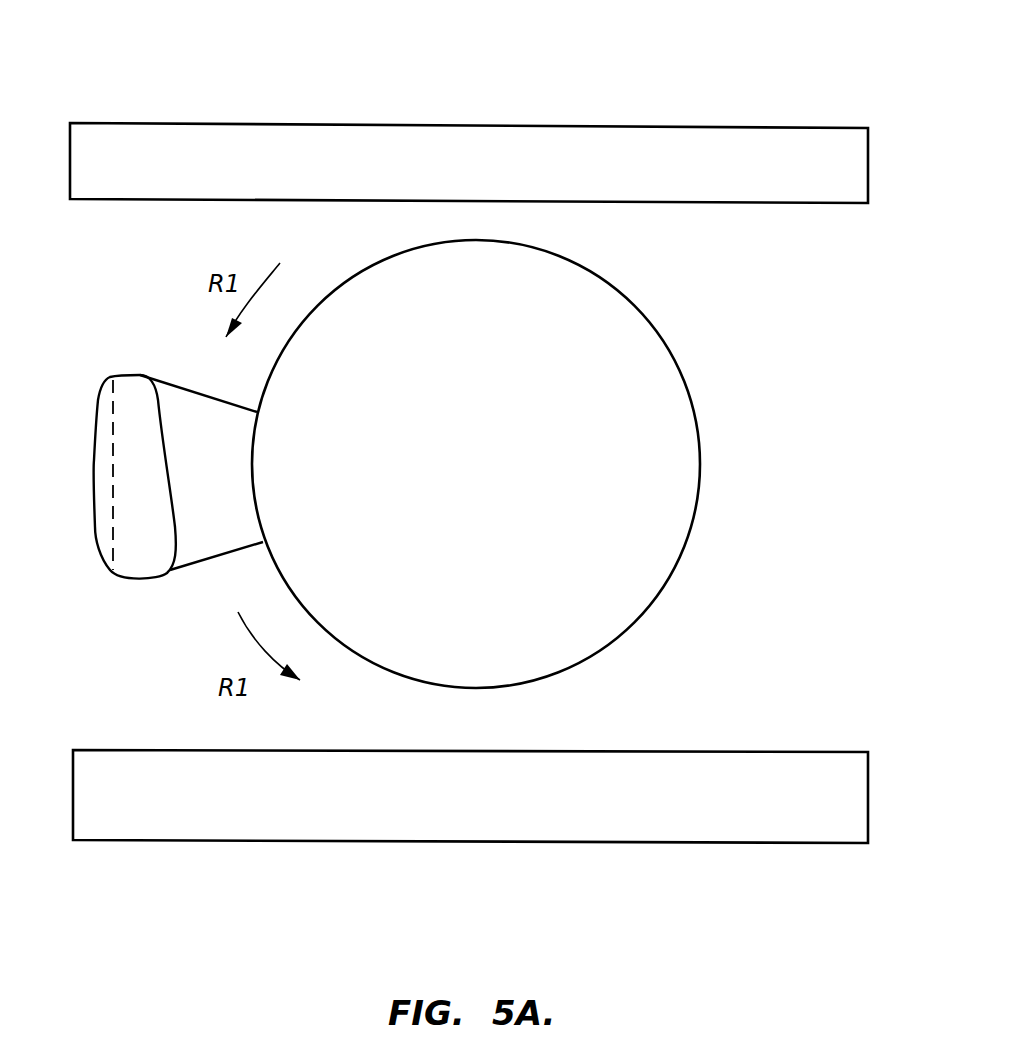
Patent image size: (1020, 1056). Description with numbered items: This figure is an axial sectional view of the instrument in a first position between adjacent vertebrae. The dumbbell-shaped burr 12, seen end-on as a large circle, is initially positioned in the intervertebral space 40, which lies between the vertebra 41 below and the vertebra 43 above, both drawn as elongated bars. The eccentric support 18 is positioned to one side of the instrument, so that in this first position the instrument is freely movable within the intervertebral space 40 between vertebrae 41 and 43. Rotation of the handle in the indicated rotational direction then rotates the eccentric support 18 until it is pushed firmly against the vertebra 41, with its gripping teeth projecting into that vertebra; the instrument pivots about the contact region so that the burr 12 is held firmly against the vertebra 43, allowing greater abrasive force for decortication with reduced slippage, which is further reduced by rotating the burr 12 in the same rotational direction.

The dumbbell-shaped burr 12 is at (655, 382).
The eccentric support 18 is at (115, 470).
The intervertebral space 40 is at (832, 475).
The vertebra 41 is at (703, 788).
The vertebra 43 is at (655, 158).